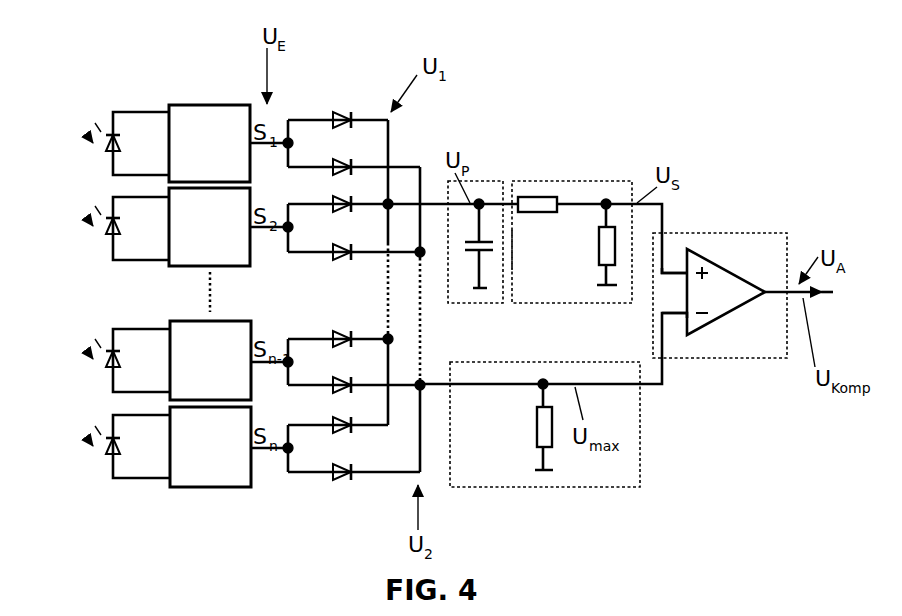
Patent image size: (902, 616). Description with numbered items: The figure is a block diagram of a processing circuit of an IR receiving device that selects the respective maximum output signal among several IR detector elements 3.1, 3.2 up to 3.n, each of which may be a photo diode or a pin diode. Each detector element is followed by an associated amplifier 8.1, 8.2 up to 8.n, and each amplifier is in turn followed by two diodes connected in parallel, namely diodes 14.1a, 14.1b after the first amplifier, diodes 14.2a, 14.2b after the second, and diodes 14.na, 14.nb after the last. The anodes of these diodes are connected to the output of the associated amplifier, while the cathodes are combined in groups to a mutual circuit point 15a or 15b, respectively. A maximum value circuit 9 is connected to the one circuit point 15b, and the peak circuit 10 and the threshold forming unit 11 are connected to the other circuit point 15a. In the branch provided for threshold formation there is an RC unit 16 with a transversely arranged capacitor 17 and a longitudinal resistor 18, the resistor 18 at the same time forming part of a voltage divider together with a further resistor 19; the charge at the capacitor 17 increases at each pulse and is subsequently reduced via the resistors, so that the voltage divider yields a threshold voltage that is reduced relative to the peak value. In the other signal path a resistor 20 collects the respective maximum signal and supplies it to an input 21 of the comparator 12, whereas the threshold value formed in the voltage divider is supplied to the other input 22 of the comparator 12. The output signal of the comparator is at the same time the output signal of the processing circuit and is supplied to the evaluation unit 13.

The IR detector element 3.1 is at (107, 132).
The IR detector element 3.2 is at (107, 215).
The IR detector element 3.n is at (107, 433).
The amplifier 8.1 is at (211, 104).
The amplifier 8.2 is at (183, 267).
The amplifier 8.n is at (228, 488).
The diode 14.1a is at (338, 112).
The diode 14.1b is at (345, 160).
The diode 14.2a is at (338, 195).
The diode 14.2b is at (335, 259).
The diode 14.na is at (348, 433).
The diode 14.nb is at (345, 481).
The circuit point 15a is at (387, 207).
The circuit point 15b is at (422, 382).
The peak circuit 10 is at (489, 178).
The threshold forming unit 11 is at (539, 178).
The maximum value circuit 9 is at (505, 490).
The comparator 12 is at (739, 231).
The RC unit 16 is at (514, 249).
The capacitor 17 is at (473, 253).
The resistor 18 is at (527, 213).
The resistor 19 is at (597, 243).
The resistor 20 is at (537, 433).
The input 21 is at (670, 318).
The input 22 is at (668, 270).
The evaluation unit 13 is at (852, 293).